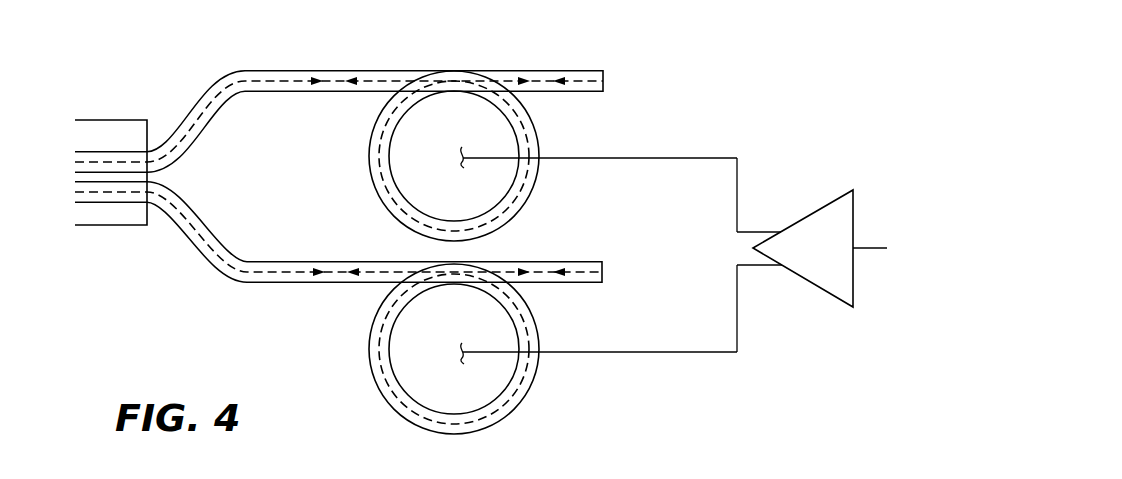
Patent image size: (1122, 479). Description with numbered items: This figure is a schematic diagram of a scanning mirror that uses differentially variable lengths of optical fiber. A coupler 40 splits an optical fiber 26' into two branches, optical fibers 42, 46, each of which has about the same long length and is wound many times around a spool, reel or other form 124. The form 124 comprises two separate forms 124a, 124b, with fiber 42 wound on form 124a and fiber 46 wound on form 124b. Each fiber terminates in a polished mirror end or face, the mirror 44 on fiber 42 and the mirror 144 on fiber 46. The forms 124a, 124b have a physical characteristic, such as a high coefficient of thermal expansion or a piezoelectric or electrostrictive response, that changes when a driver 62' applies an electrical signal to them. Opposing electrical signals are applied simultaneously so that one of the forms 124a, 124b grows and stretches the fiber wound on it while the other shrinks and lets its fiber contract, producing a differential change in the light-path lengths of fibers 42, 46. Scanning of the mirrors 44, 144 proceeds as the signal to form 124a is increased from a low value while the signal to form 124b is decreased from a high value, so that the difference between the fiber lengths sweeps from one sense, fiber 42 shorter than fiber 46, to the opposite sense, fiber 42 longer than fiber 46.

The optical coupler 40 is at (108, 120).
The optical fiber waveguide 26' is at (339, 181).
The optical fiber 42 is at (232, 98).
The optical fiber 46 is at (232, 257).
The polished mirror end 44 is at (603, 73).
The polished mirror end 144 is at (603, 278).
The form 124 is at (522, 252).
The form 124a is at (480, 204).
The form 124b is at (454, 349).
The driver 62' is at (820, 248).